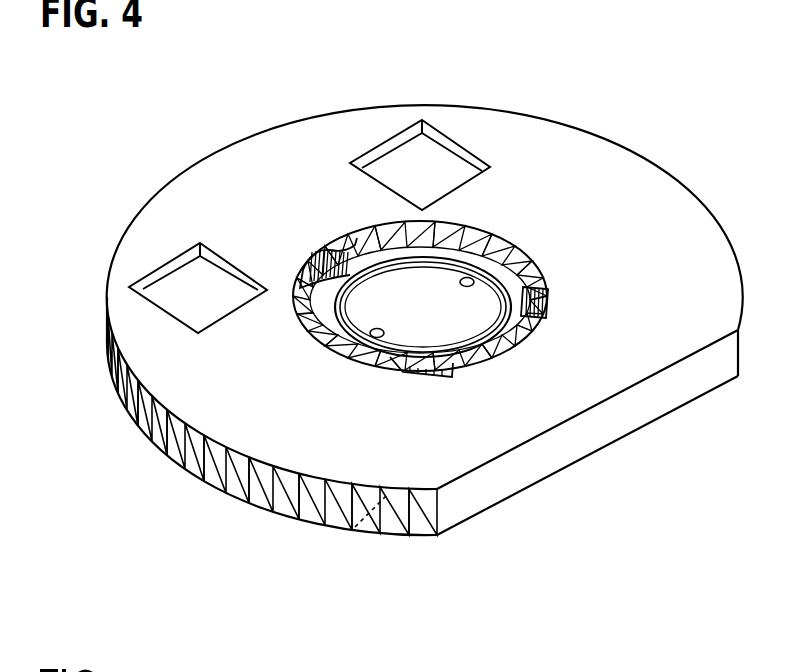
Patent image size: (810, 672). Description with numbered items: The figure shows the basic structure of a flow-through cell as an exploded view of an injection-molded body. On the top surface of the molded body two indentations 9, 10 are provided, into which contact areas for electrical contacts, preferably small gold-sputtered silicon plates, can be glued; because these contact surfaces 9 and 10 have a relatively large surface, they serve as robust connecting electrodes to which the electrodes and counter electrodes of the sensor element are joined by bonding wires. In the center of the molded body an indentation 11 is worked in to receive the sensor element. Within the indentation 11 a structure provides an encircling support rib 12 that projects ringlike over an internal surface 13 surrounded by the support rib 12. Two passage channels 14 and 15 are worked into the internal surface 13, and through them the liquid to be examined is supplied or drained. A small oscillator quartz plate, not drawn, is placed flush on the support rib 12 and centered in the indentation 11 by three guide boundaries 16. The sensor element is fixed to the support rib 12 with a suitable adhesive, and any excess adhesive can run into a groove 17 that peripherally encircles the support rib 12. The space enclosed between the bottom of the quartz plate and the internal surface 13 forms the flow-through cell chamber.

The indentation 9 is at (198, 285).
The indentation 10 is at (413, 160).
The indentation 11 is at (470, 240).
The support rib 12 is at (335, 299).
The internal surface 13 is at (377, 293).
The passage channel 14 is at (380, 337).
The passage channel 15 is at (466, 288).
The guide boundary 16 is at (533, 270).
The groove 17 is at (527, 336).